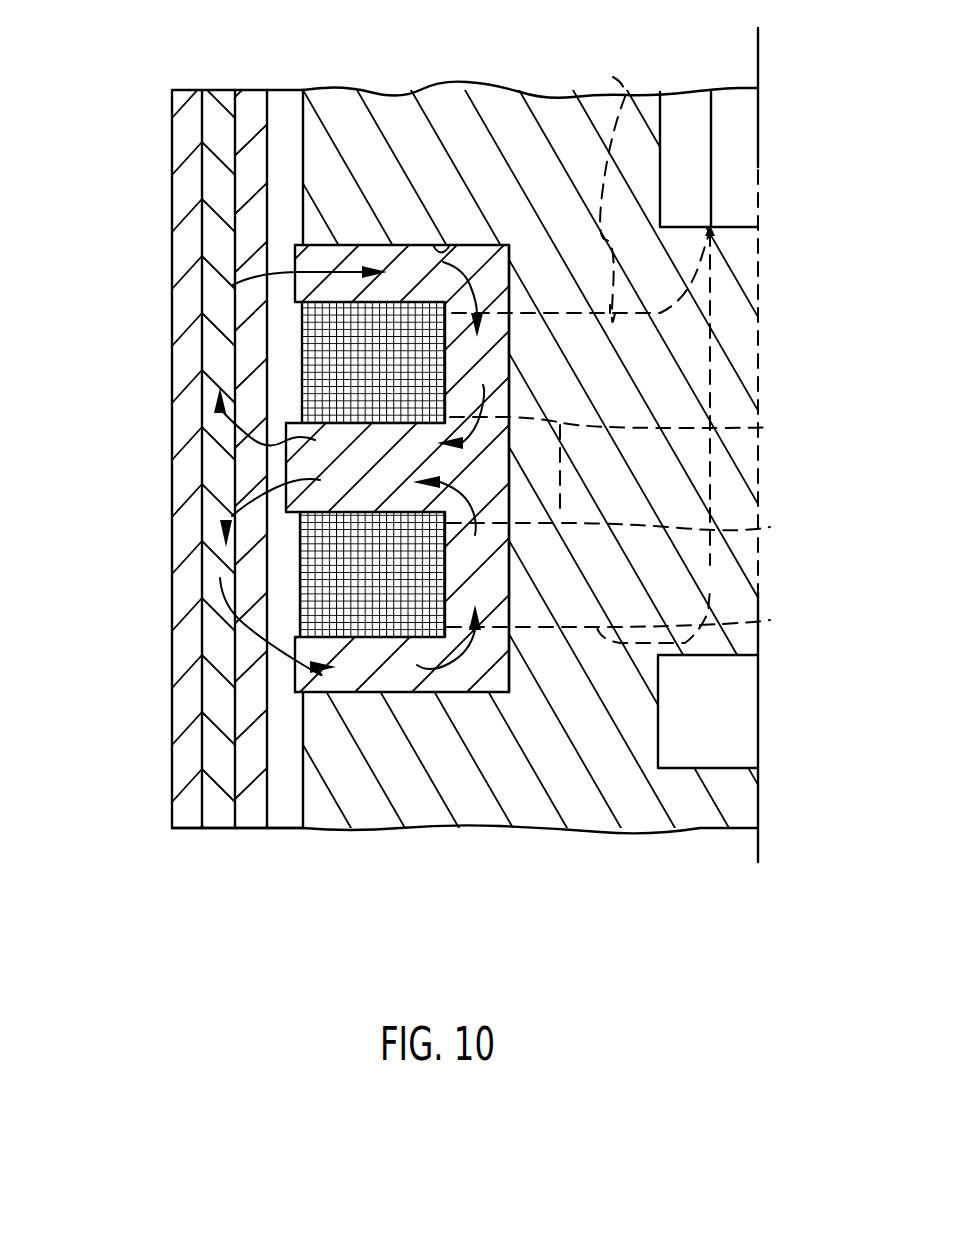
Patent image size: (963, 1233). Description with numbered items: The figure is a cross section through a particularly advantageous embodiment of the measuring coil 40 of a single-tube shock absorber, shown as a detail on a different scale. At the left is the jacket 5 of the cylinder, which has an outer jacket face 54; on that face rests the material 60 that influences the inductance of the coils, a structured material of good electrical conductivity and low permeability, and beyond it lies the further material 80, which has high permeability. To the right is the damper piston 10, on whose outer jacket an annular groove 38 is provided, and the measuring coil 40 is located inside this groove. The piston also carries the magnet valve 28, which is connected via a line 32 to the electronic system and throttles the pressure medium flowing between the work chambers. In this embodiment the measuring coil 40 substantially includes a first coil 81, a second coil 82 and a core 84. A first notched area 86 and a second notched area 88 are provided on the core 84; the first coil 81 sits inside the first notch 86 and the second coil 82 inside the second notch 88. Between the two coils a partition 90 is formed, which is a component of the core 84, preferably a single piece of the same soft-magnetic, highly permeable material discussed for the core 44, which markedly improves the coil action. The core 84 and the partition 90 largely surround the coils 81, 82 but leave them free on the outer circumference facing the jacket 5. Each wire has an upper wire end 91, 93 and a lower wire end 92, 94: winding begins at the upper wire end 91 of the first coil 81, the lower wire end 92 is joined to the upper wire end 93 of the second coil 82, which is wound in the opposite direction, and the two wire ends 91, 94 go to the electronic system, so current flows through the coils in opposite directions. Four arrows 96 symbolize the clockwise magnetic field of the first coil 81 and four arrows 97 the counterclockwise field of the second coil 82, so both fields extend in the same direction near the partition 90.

The jacket 5 is at (260, 97).
The damper piston 10 is at (733, 320).
The magnet valve 28 is at (723, 742).
The line 32 is at (712, 147).
The annular groove 38 is at (453, 243).
The measuring coil 40 is at (470, 692).
The core 44 is at (497, 357).
The outer jacket face 54 is at (236, 778).
The material that influences an inductance 60 is at (227, 97).
The further material 80 is at (185, 93).
The first coil 81 is at (320, 352).
The second coil 82 is at (333, 578).
The core 84 is at (327, 680).
The first notched area 86 is at (323, 420).
The second notched area 88 is at (290, 516).
The partition 90 is at (300, 459).
The upper wire end 91 is at (583, 309).
The lower wire end 92 is at (631, 457).
The upper wire end 93 is at (624, 523).
The lower wire end 94 is at (624, 616).
The arrows 96 is at (220, 307).
The arrows 97 is at (224, 522).